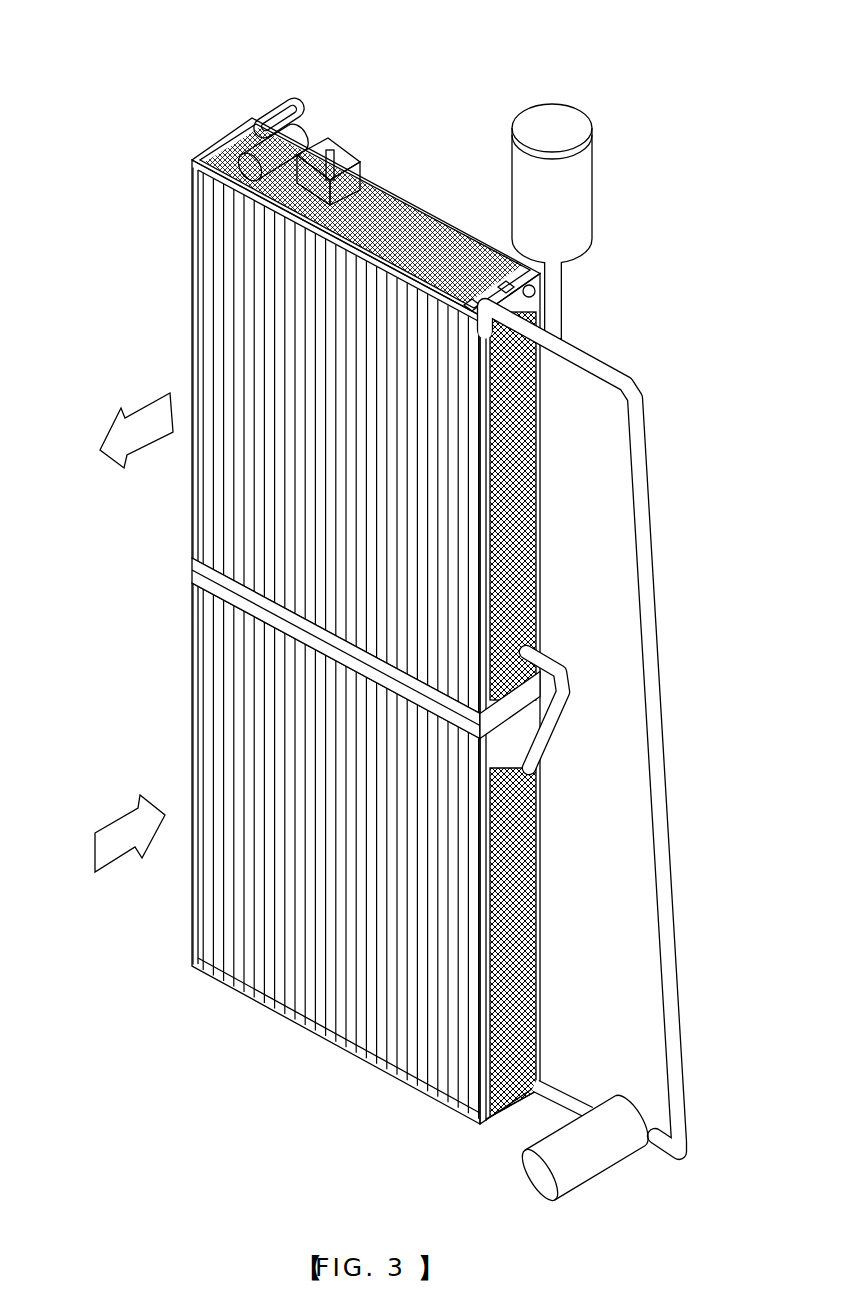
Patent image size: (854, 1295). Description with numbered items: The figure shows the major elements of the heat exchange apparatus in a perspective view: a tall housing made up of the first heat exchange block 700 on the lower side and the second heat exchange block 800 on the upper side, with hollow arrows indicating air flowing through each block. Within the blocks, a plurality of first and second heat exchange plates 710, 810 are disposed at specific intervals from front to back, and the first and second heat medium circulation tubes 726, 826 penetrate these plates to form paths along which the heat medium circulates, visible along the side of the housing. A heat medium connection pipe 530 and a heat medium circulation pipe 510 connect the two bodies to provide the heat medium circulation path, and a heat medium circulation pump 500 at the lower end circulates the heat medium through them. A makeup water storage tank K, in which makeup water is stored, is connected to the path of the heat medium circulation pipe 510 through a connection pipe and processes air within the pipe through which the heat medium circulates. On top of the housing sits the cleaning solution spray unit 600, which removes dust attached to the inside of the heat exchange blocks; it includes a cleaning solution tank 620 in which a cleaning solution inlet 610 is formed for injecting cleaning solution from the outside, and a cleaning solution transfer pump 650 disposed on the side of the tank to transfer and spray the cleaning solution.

The cleaning solution spray unit 600 is at (268, 66).
The cleaning solution transfer pump 650 is at (250, 122).
The cleaning solution inlet 610 is at (331, 150).
The cleaning solution tank 620 is at (340, 178).
The makeup water storage tank K is at (590, 203).
The second heat exchange plate 810 is at (245, 265).
The second heat exchange block 800 is at (269, 437).
The second heat medium circulation tube 826 is at (528, 585).
The first heat exchange plate 710 is at (245, 655).
The first heat exchange block 700 is at (268, 853).
The first heat medium circulation tube 726 is at (528, 948).
The heat medium connection pipe 530 is at (548, 737).
The heat medium circulation pipe 510 is at (668, 690).
The heat medium circulation pump 500 is at (605, 1164).